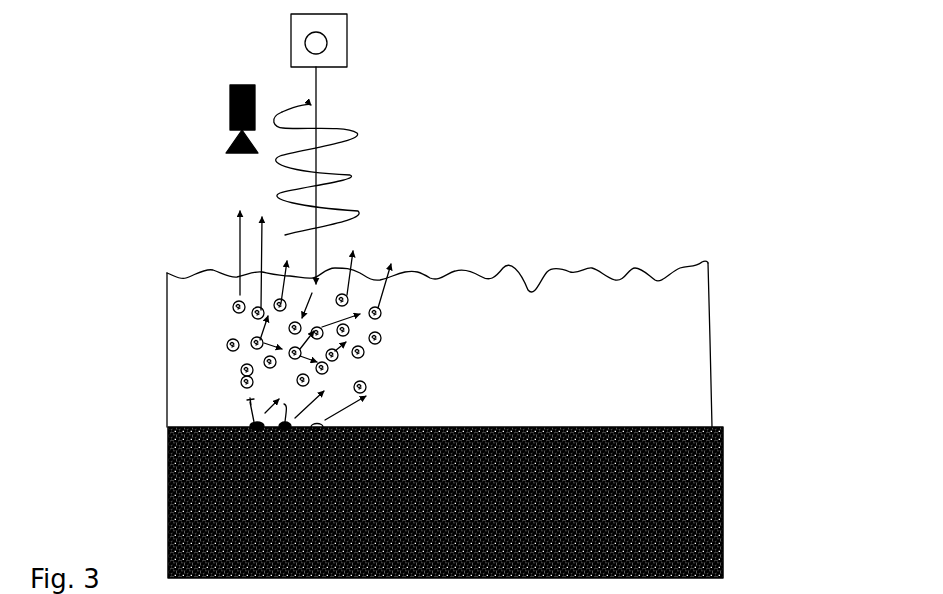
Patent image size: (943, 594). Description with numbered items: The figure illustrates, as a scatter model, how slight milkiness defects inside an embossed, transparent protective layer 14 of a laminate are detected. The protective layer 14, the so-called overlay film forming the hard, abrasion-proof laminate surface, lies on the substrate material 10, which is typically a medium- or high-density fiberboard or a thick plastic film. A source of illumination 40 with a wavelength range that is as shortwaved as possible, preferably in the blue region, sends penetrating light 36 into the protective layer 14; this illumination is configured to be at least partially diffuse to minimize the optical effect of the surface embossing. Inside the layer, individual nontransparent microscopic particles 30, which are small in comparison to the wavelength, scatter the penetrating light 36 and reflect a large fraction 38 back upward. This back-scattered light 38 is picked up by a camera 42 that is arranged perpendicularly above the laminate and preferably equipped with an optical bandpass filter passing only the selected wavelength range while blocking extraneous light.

The substrate material 10 is at (700, 553).
The transparent protective layer 14 is at (693, 323).
The microscopic particles 30 is at (236, 308).
The penetrating light 36 is at (341, 177).
The back-scattered light 38 is at (262, 238).
The source of illumination 40 is at (340, 42).
The camera 42 is at (230, 88).